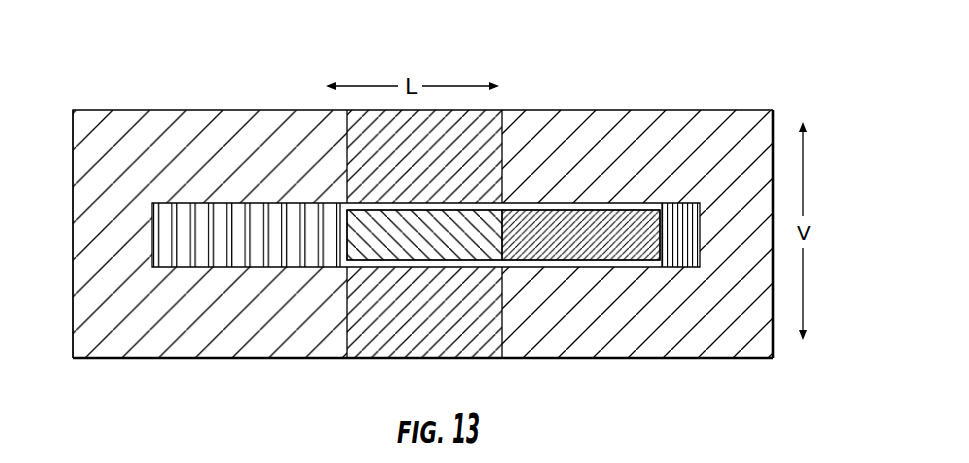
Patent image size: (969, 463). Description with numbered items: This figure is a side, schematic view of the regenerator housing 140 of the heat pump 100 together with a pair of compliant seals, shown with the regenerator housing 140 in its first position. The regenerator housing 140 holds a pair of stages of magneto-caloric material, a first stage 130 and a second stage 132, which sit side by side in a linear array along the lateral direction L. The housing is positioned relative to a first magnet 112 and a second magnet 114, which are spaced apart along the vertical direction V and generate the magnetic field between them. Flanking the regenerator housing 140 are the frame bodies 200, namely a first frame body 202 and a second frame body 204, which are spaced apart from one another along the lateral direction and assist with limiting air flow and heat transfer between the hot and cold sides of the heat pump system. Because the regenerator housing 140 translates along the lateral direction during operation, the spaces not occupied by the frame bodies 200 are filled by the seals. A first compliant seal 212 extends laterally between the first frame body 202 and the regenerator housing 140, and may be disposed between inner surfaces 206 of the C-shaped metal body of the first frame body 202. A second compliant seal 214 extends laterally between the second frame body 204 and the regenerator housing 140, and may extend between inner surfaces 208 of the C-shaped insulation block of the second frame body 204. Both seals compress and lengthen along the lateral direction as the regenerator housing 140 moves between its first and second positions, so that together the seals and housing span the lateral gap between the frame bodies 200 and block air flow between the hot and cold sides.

The heat pump 100 is at (736, 62).
The first magnet 112 is at (492, 113).
The second magnet 114 is at (473, 360).
The first stage 130 is at (424, 235).
The second stage 132 is at (581, 235).
The regenerator housing 140 is at (381, 252).
The frame bodies 200 is at (100, 110).
The first frame body 202 is at (725, 360).
The second frame body 204 is at (73, 222).
The inner surfaces 206 is at (687, 274).
The inner surfaces 208 is at (168, 234).
The first compliant seal 212 is at (690, 232).
The second compliant seal 214 is at (180, 255).